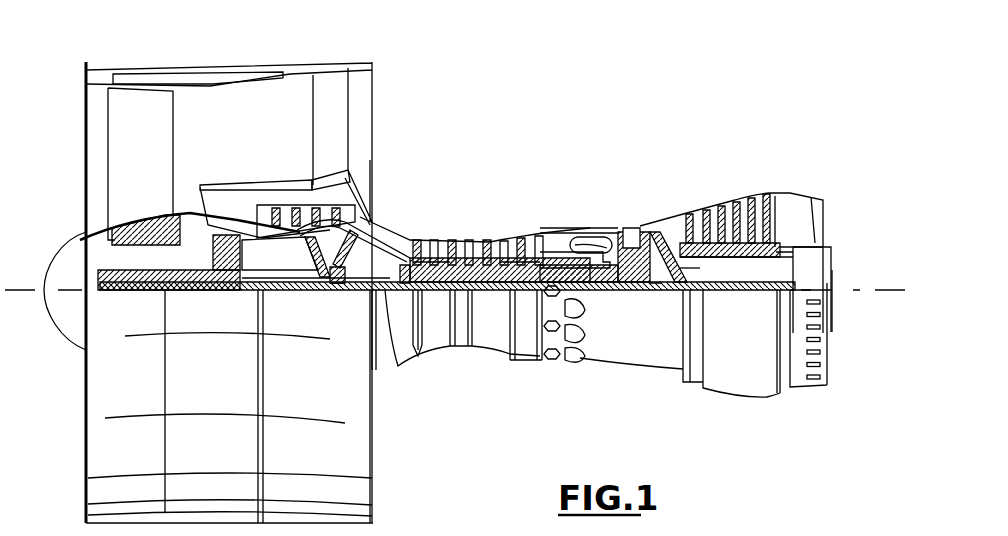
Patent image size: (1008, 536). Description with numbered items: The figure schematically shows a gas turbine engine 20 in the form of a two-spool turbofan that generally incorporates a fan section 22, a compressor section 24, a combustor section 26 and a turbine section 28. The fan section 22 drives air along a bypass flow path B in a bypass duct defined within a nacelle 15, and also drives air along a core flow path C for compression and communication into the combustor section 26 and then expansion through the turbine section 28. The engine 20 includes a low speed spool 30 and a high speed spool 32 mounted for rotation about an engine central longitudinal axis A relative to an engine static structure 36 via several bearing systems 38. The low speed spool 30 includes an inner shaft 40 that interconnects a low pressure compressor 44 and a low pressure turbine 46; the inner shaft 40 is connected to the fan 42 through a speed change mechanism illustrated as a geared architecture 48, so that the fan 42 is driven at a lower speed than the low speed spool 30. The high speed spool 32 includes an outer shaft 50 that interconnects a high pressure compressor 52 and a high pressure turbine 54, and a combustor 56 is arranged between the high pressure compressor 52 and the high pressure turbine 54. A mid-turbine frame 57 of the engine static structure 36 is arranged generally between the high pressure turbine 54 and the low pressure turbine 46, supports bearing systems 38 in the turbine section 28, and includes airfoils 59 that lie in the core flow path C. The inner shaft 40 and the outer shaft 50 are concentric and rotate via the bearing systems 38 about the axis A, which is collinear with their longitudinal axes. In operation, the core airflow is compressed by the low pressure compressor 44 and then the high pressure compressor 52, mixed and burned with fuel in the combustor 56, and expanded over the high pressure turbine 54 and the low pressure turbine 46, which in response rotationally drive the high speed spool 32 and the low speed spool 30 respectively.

The gas turbine engine 20 is at (592, 108).
The fan section 22 is at (208, 266).
The compressor section 24 is at (475, 224).
The combustor section 26 is at (613, 224).
The turbine section 28 is at (735, 228).
The nacelle 15 is at (228, 72).
The fan 42 is at (157, 169).
The low pressure compressor 44 is at (305, 230).
The geared architecture 48 is at (233, 290).
The low speed spool 30 is at (493, 300).
The engine static structure 36 is at (525, 367).
The bearing systems 38 is at (337, 286).
The inner shaft 40 is at (391, 355).
The outer shaft 50 is at (595, 289).
The high pressure compressor 52 is at (472, 237).
The high speed spool 32 is at (520, 232).
The combustor 56 is at (585, 242).
The high pressure turbine 54 is at (637, 230).
The low pressure turbine 46 is at (735, 200).
The mid-turbine frame 57 is at (672, 212).
The airfoils 59 is at (687, 268).
The engine central longitudinal axis A is at (896, 290).
The bypass flow path B is at (203, 128).
The core flow path C is at (236, 211).